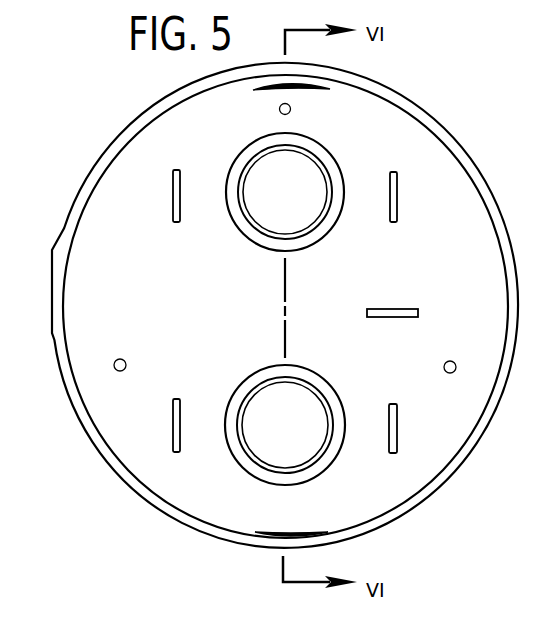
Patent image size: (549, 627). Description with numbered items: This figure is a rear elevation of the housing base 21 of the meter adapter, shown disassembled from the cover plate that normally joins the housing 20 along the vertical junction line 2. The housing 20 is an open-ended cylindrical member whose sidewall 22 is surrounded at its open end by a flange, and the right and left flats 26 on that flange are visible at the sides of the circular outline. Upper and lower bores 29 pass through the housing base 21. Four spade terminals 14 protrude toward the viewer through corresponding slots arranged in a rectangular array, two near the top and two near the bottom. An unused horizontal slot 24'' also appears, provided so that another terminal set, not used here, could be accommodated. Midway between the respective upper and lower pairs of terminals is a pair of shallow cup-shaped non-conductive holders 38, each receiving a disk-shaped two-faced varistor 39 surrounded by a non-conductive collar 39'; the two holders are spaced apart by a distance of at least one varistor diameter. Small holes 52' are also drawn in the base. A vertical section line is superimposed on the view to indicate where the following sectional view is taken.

The junction line 2 is at (520, 280).
The housing 20 is at (472, 139).
The sidewall 22 is at (498, 211).
The flats 26 is at (52, 305).
The housing base 21 is at (204, 293).
The bores 29 is at (292, 112).
The holders 38 is at (338, 167).
The varistors 39 is at (285, 309).
The collar 39' is at (306, 309).
The spade terminals 14 is at (171, 190).
The horizontal slot 24'' is at (406, 297).
The locating holes 52' is at (302, 347).